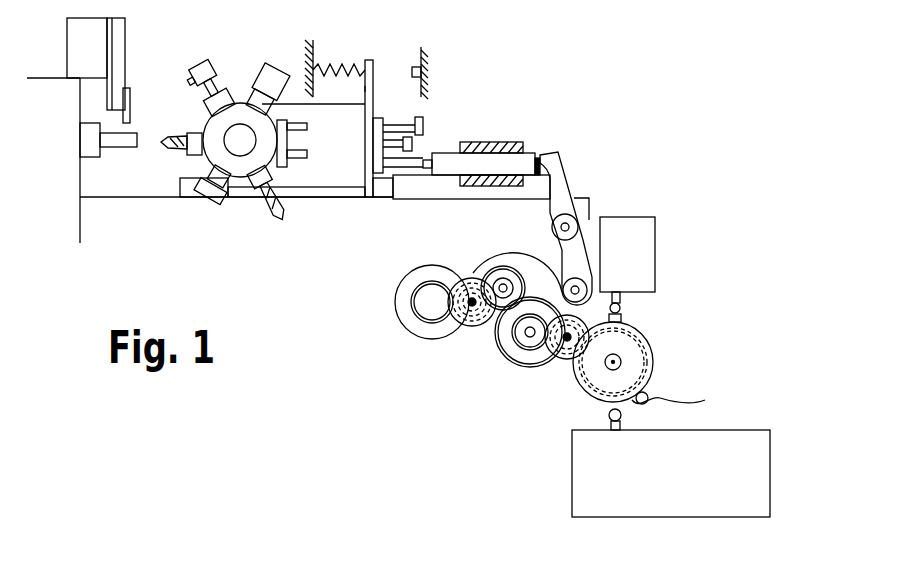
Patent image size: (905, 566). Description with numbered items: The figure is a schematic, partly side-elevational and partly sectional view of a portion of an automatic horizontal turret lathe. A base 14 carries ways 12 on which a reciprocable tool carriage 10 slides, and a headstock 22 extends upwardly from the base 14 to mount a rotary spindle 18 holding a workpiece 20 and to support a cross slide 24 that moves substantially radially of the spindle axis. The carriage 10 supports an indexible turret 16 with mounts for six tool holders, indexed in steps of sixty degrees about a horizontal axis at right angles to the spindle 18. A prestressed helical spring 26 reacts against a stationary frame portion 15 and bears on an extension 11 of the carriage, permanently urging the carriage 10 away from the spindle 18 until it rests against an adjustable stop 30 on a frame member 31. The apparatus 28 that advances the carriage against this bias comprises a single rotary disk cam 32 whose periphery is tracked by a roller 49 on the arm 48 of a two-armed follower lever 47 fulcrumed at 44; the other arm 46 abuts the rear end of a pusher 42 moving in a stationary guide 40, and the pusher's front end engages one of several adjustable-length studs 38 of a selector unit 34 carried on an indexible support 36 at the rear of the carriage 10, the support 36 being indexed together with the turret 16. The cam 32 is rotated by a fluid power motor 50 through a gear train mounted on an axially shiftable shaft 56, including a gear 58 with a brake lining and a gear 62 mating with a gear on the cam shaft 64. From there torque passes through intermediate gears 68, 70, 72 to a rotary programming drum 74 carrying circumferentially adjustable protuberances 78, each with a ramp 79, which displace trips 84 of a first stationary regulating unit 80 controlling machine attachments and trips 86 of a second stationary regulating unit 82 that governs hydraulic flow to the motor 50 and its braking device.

The tool carriage 10 is at (325, 167).
The extension of the carriage 11 is at (365, 89).
The ways 12 is at (383, 194).
The base 14 is at (155, 200).
The stationary portion of the machine frame 15 is at (307, 52).
The indexible turret 16 is at (241, 112).
The rotary spindle 18 is at (88, 152).
The workpiece 20 is at (128, 140).
The headstock 22 is at (54, 88).
The cross slide 24 is at (131, 47).
The prestressed helical spring 26 is at (343, 63).
The apparatus 28 is at (393, 332).
The adjustable stop 30 is at (413, 72).
The frame member 31 is at (428, 55).
The rotary cam 32 is at (532, 268).
The selector unit 34 is at (421, 110).
The indexible support 36 is at (377, 122).
The studs 38 is at (413, 143).
The stationary guide 40 is at (480, 142).
The pusher 42 is at (507, 160).
The fulcrum 44 is at (580, 250).
The other arm of the follower lever 46 is at (558, 172).
The two-armed follower lever 47 is at (568, 181).
The arm of the follower lever 48 is at (603, 230).
The roller 49 is at (586, 285).
The fluid power motor 50 is at (417, 330).
The shaft 56 is at (471, 299).
The gear 58 is at (463, 327).
The gear 62 is at (486, 333).
The shaft of the cam 64 is at (498, 283).
The intermediate gear 68 is at (512, 353).
The intermediate gear 70 is at (530, 348).
The intermediate gear 72 is at (562, 362).
The rotary programming drum 74 is at (635, 357).
The protuberances 78 is at (622, 317).
The ramp 79 is at (679, 406).
The first stationary regulating unit 80 is at (664, 247).
The second stationary regulating unit 82 is at (741, 424).
The trips 84 is at (618, 297).
The trips 86 is at (622, 423).